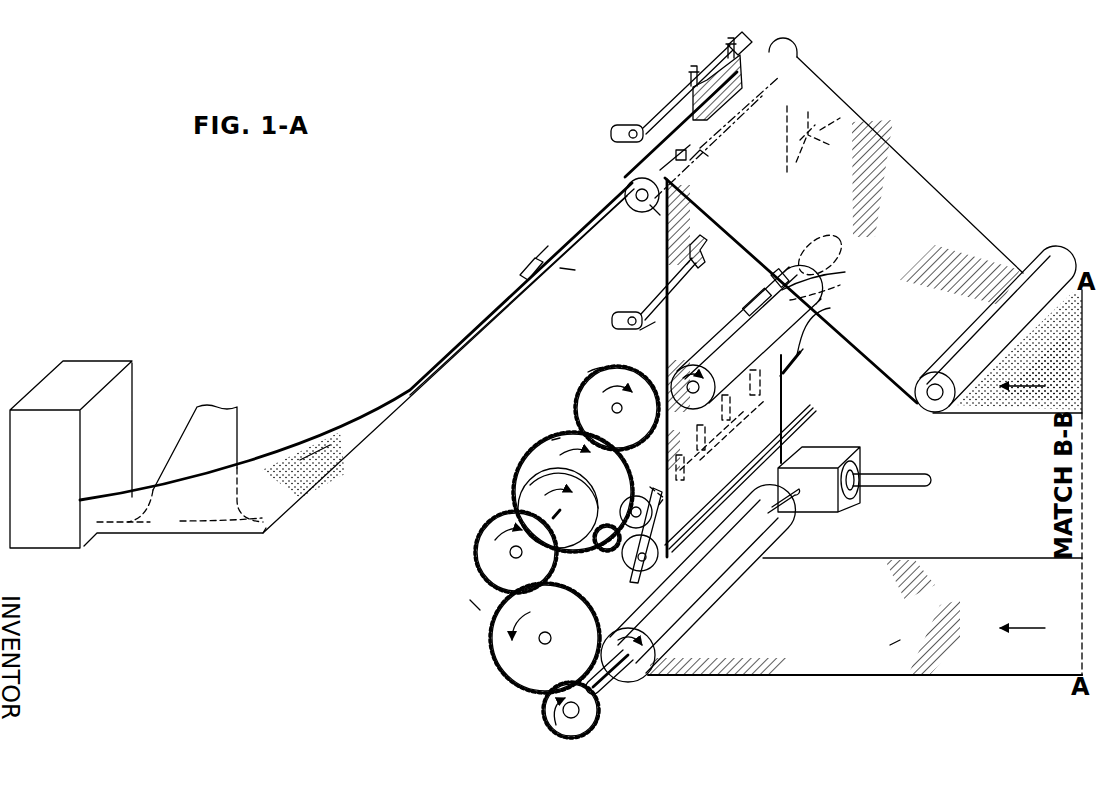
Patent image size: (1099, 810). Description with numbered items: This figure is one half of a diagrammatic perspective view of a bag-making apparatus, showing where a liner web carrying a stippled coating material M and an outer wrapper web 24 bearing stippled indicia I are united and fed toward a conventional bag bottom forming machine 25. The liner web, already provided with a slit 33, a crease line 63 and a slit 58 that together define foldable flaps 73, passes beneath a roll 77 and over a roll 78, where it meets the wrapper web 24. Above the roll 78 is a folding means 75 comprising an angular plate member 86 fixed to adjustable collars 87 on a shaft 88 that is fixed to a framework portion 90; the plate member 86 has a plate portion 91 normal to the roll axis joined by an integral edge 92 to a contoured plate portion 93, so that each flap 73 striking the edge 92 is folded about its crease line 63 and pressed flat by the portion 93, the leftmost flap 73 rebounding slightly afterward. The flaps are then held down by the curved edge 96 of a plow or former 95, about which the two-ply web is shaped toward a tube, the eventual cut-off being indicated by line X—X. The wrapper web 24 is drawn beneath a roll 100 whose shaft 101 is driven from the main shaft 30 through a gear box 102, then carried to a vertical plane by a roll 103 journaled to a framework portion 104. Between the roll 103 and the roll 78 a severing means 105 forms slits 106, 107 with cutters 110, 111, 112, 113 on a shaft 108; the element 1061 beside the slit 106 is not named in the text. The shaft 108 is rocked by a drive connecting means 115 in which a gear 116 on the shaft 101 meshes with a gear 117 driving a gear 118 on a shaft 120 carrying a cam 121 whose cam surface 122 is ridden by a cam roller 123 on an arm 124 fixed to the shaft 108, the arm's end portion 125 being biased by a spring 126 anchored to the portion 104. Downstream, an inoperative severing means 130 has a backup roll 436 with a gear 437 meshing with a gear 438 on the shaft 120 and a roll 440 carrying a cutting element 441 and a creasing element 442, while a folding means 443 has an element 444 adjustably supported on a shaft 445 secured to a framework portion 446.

The bag bottom forming machine 25 is at (134, 378).
The plow or former 95 is at (220, 437).
The curved edge 96 is at (262, 535).
The indicia I is at (325, 478).
The slit 58 is at (520, 270).
The foldable flaps 73 is at (541, 256).
The line of cut-off X is at (574, 254).
The coating material M is at (1038, 405).
The outer wrapper web 24 is at (924, 645).
The roll 77 is at (928, 378).
The plate portion 93 is at (630, 172).
The framework portion 90 is at (610, 136).
The shaft 88 is at (662, 112).
The adjustable collars 87 is at (688, 78).
The plate portion 91 is at (717, 87).
The angular plate member 86 is at (722, 52).
The folding means 75 is at (660, 58).
The integral edge 92 is at (748, 98).
The crease line 63 is at (718, 130).
The slit 33 is at (695, 152).
The slit 106 is at (682, 165).
The roll 78 is at (690, 240).
The folding element 444 is at (712, 238).
The creasing element 442 is at (815, 245).
The slit 107 is at (775, 280).
The folding means 443 is at (674, 258).
The shaft 445 is at (670, 297).
The framework portion 446 is at (616, 322).
The stop member 1061 is at (692, 323).
The cutting element 441 is at (839, 280).
The shaft 108 is at (815, 312).
The roll 440 is at (744, 355).
The severing means 130 is at (607, 352).
The severing means 105 is at (795, 373).
The roll 103 is at (790, 412).
The gear box 102 is at (828, 440).
The main shaft 30 is at (900, 488).
The shaft 101 is at (790, 507).
The roll 100 is at (734, 575).
The framework portion 104 is at (640, 610).
The backup roll 436 is at (617, 408).
The gear 437 is at (580, 398).
The gear 438 is at (548, 445).
The cam surface 122 is at (540, 470).
The cam 121 is at (525, 495).
The shaft 120 is at (556, 520).
The cam roller 123 is at (607, 552).
The end portion 125 is at (630, 497).
The spring 126 is at (656, 545).
The arm 124 is at (628, 570).
The cutter 110 is at (656, 512).
The cutter 111 is at (710, 452).
The cutter 112 is at (744, 440).
The cutter 113 is at (766, 410).
The gear 118 is at (521, 552).
The gear 117 is at (562, 680).
The gear 116 is at (575, 738).
The drive connecting means 115 is at (468, 622).